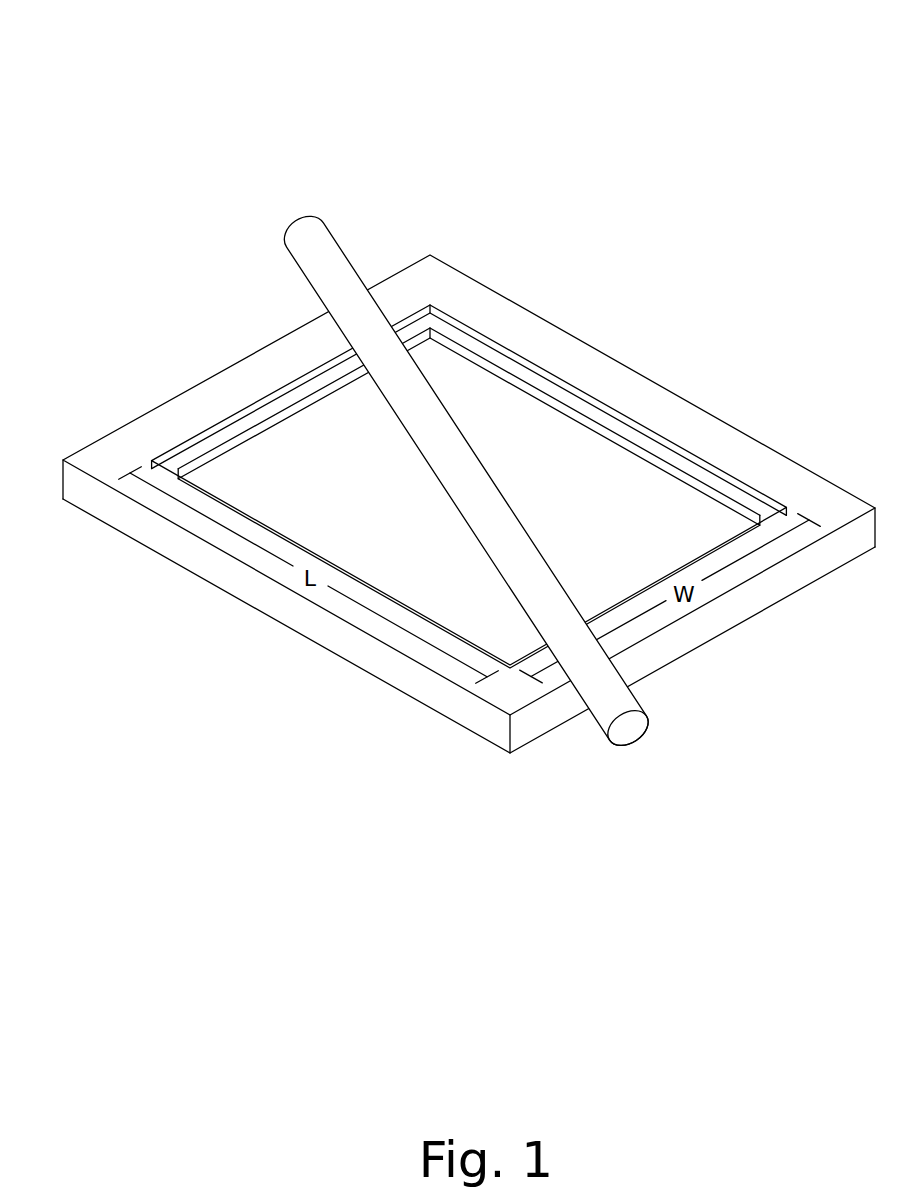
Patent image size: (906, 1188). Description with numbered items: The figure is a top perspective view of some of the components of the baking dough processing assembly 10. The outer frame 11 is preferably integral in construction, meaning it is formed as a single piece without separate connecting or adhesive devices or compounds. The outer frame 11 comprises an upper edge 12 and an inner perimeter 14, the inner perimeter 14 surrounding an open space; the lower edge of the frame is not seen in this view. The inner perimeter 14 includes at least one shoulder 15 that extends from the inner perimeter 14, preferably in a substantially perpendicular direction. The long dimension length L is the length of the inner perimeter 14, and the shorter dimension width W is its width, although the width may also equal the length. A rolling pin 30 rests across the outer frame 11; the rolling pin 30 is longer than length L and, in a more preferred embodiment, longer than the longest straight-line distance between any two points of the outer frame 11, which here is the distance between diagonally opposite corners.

The baking dough processing assembly 10 is at (766, 97).
The outer frame 11 is at (595, 348).
The upper edge 12 is at (495, 318).
The inner perimeter 14 is at (640, 423).
The shoulder 15 is at (712, 480).
The rolling pin 30 is at (328, 231).